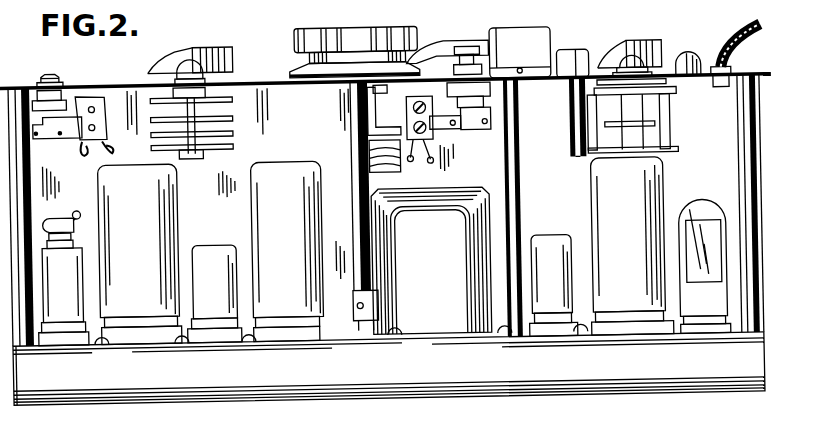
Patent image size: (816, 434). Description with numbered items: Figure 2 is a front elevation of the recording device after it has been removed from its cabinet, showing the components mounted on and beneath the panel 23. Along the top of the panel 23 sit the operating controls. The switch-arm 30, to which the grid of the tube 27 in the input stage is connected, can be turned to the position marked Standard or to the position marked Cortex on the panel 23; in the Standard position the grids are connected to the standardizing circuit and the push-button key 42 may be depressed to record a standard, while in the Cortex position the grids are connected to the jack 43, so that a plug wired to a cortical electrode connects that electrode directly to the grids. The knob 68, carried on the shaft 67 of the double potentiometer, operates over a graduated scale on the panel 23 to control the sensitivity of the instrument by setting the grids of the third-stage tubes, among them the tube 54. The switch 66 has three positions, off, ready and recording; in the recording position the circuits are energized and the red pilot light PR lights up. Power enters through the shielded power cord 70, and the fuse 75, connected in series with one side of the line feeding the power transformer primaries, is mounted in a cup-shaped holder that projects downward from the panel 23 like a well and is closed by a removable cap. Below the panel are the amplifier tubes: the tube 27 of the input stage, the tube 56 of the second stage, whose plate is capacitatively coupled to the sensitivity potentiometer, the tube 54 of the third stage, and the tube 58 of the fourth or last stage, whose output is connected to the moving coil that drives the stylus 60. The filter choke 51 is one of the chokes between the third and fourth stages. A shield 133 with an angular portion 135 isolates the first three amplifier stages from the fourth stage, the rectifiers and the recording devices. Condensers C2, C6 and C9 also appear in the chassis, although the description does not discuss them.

The jack 43 is at (46, 68).
The panel 23 is at (91, 81).
The switch-arm 30 is at (209, 47).
The knob 68 is at (362, 32).
The stylus 60 is at (446, 41).
The push-button key 42 is at (471, 48).
The shaft 67 is at (359, 125).
The shield 133 is at (310, 121).
The fuse 75 is at (569, 128).
The switch 66 is at (645, 48).
The pilot light PR is at (693, 50).
The power cord 70 is at (734, 50).
The angular portion 135 is at (515, 166).
The filter choke 51 is at (438, 224).
The tube 27 is at (65, 261).
The tube C2 is at (168, 216).
The tube 56 is at (208, 247).
The tube C6 is at (312, 226).
The tube 54 is at (541, 240).
The tube C9 is at (660, 207).
The tube 58 is at (708, 216).